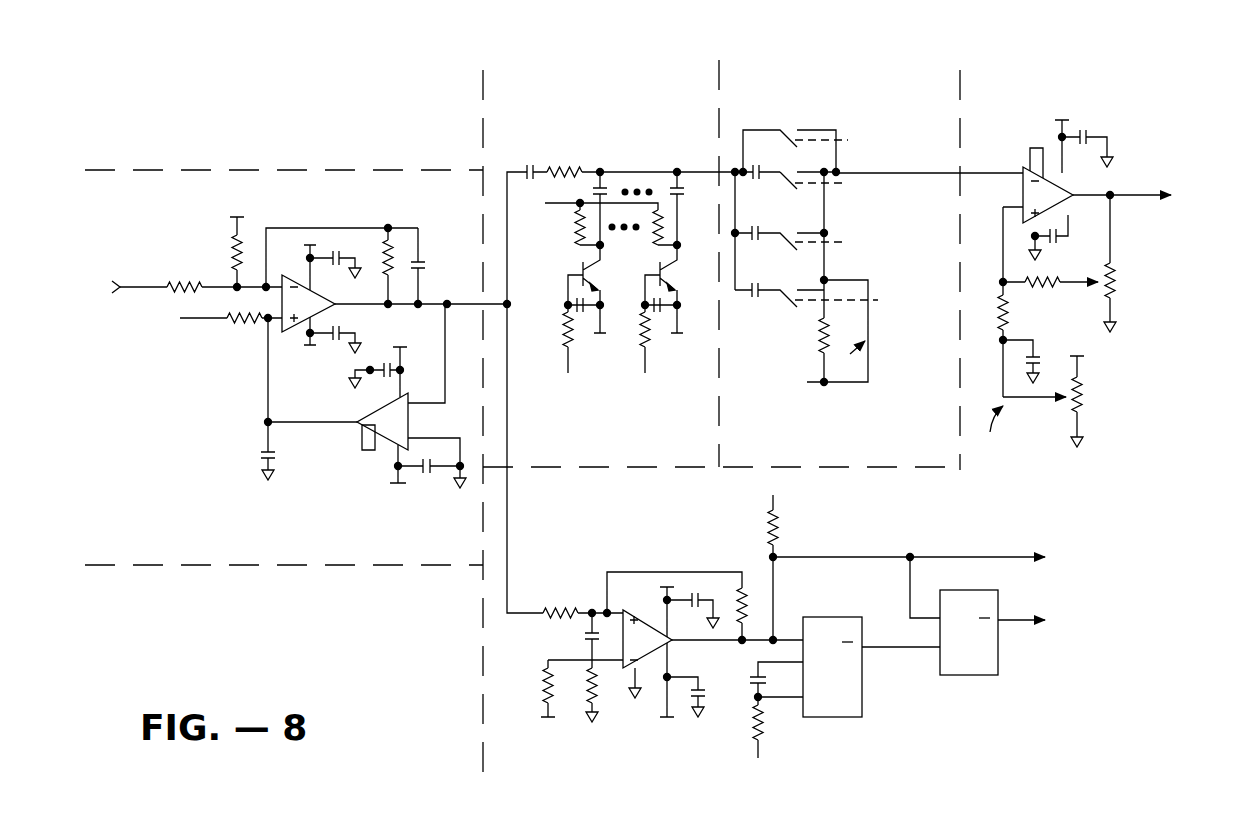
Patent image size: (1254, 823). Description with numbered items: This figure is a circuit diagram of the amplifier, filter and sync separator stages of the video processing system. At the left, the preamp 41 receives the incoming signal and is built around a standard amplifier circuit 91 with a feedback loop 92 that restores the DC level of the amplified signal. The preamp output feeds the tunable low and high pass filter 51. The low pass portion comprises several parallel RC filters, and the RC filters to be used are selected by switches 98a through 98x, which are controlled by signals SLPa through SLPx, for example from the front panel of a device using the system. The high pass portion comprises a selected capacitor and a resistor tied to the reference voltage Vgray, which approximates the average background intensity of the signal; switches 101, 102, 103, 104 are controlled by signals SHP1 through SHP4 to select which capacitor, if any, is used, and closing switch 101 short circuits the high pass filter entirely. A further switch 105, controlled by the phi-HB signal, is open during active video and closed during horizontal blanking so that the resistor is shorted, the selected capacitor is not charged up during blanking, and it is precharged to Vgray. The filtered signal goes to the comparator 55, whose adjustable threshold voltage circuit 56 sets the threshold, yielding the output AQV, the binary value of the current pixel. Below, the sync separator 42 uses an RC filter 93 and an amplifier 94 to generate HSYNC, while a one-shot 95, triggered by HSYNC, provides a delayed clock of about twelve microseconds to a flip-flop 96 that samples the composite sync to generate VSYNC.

The preamp 41 is at (198, 441).
The sync separator 42 is at (640, 525).
The tunable low and high pass filter 51 is at (703, 53).
The comparator 55 is at (1153, 251).
The adjustable threshold voltage circuit 56 is at (1105, 391).
The amplifier circuit 91 is at (333, 220).
The feedback loop 92 is at (336, 384).
The RC filter 93 is at (575, 580).
The amplifier 94 is at (609, 716).
The one-shot 95 is at (825, 717).
The flip-flop 96 is at (978, 675).
The switch 98a is at (598, 378).
The switch 98x is at (678, 378).
The switch 101 is at (789, 127).
The switch 102 is at (791, 167).
The switch 103 is at (789, 226).
The switch 104 is at (791, 284).
The switch 105 is at (872, 345).